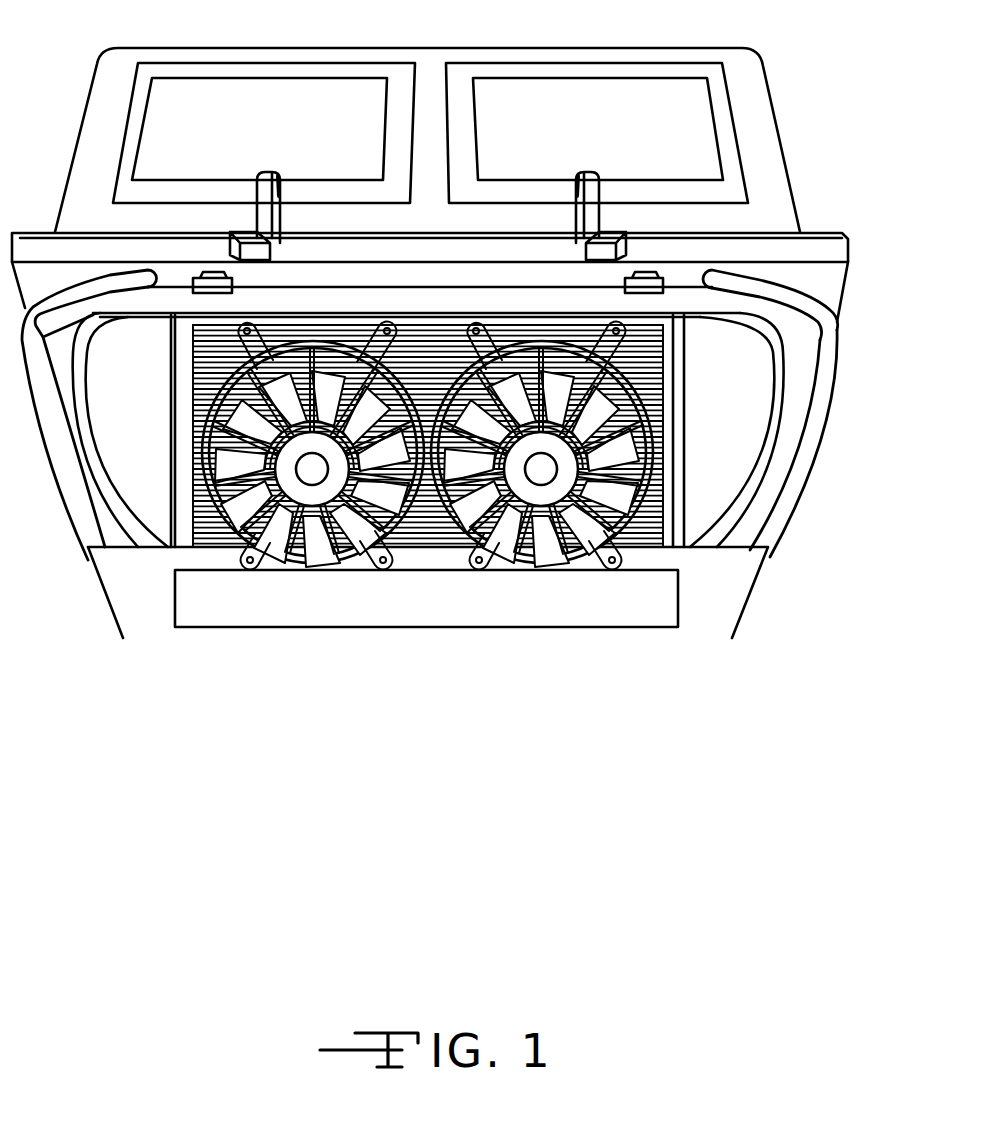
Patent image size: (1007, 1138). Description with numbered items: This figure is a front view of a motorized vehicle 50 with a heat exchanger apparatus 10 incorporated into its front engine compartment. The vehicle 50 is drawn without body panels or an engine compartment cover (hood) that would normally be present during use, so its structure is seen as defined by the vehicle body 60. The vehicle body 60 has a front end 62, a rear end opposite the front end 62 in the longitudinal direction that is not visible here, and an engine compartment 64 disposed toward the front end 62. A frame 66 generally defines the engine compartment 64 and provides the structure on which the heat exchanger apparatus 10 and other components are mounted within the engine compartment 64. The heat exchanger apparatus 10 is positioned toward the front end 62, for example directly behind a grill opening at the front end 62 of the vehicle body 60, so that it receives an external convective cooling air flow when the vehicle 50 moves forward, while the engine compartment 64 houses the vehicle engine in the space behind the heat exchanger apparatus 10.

The heat exchanger apparatus 10 is at (685, 408).
The motorized vehicle 50 is at (731, 64).
The vehicle body 60 is at (818, 155).
The front end 62 is at (447, 378).
The engine compartment 64 is at (823, 339).
The frame 66 is at (802, 437).